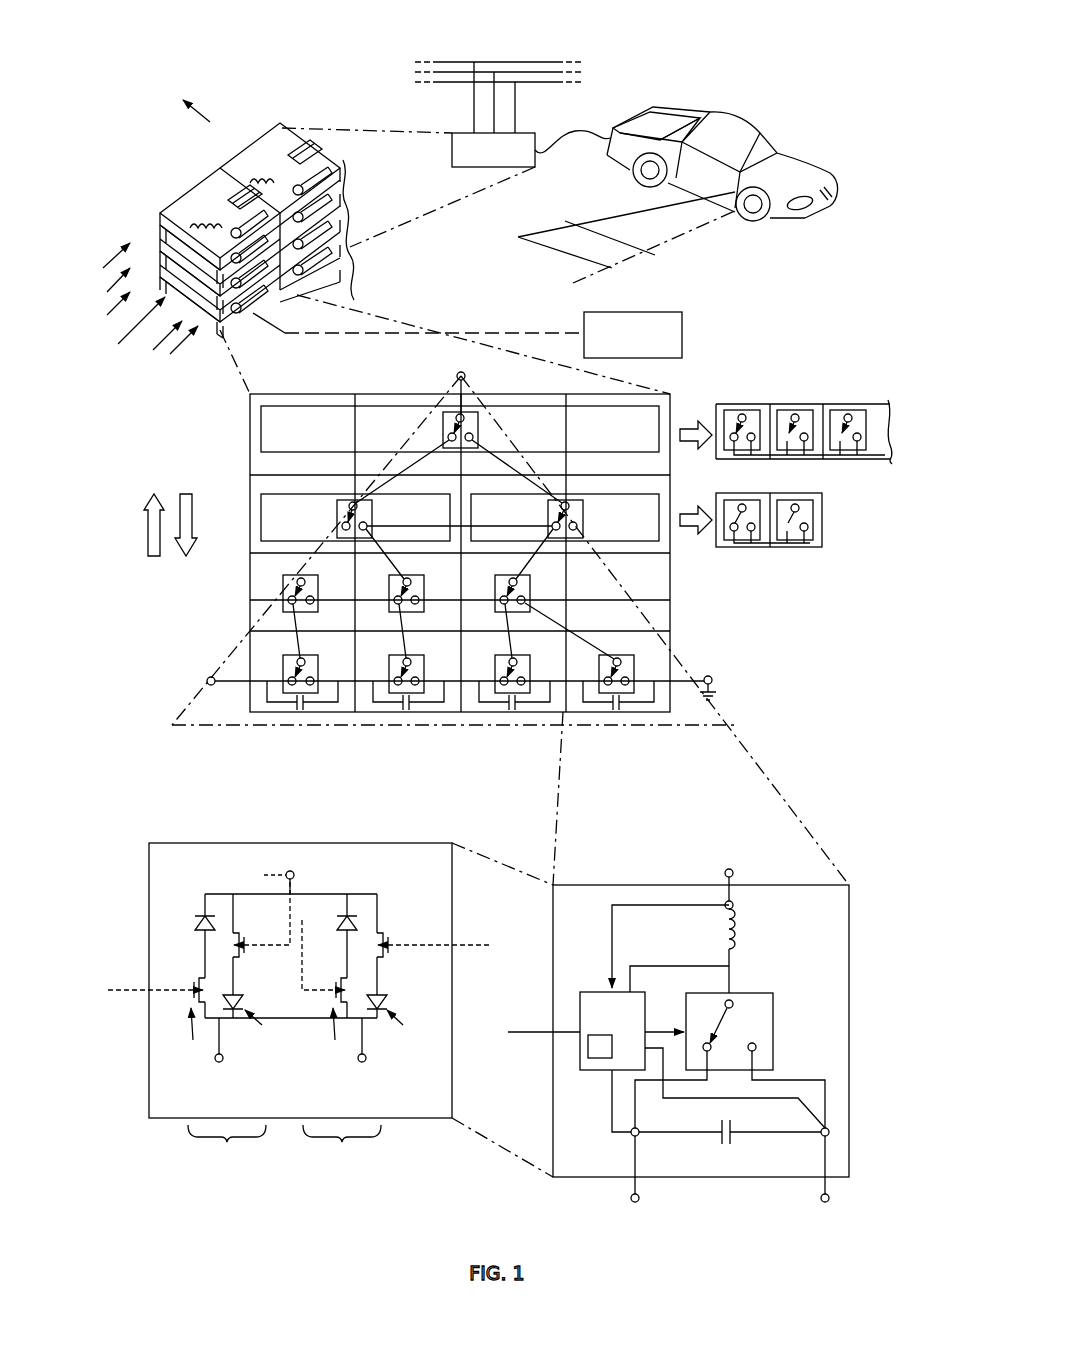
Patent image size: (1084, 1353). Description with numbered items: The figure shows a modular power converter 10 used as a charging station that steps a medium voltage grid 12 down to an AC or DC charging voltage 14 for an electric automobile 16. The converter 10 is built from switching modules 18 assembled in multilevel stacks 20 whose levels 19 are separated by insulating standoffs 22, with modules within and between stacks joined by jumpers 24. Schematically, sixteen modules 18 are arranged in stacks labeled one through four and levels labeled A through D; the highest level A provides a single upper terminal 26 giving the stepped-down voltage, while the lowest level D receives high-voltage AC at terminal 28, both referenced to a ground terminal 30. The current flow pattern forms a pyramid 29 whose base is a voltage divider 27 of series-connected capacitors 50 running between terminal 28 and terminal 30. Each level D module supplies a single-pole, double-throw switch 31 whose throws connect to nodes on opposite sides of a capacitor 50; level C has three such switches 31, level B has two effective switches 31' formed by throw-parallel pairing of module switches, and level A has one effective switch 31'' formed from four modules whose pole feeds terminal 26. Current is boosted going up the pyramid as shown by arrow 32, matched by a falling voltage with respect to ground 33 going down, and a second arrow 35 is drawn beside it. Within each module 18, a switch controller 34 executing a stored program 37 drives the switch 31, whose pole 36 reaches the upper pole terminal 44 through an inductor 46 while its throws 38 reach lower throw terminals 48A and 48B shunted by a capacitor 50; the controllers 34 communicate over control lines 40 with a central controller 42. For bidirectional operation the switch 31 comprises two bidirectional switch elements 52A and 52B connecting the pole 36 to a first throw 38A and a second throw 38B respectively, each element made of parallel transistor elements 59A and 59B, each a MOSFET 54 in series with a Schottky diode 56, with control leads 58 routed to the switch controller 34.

The modular power converter 10 is at (460, 155).
The medium voltage grid 12 is at (550, 62).
The charging voltage 14 is at (212, 120).
The electric automobile 16 is at (783, 157).
The switching module 18 is at (190, 190).
The level 19 is at (103, 285).
The multilevel stack 20 is at (182, 148).
The insulating standoff 22 is at (160, 220).
The jumper 24 is at (252, 183).
The upper terminal 26 is at (457, 373).
The voltage divider 27 is at (632, 728).
The terminal 28 is at (207, 681).
The pyramid 29 is at (405, 440).
The ground terminal 30 is at (713, 680).
The single-pole, double-throw switch 31 is at (458, 651).
The effective switch 31' is at (484, 489).
The effective switch 31'' is at (504, 430).
The arrow 32 is at (142, 530).
The ground 33 is at (703, 703).
The switch controller 34 is at (600, 990).
The voltage direction arrow 35 is at (203, 542).
The pole 36 is at (735, 1002).
The stored program 37 is at (600, 1062).
The throw 38 is at (712, 1044).
The first throw 38A is at (223, 1059).
The second throw 38B is at (366, 1059).
The control line 40 is at (335, 338).
The central controller 42 is at (683, 323).
The upper pole terminal 44 is at (745, 412).
The inductor 46 is at (723, 927).
The left throw terminal 48A is at (727, 456).
The right throw terminal 48B is at (870, 458).
The capacitor 50 is at (298, 712).
The bidirectional switch element 52A is at (351, 1010).
The bidirectional switch element 52B is at (342, 1032).
The MOSFET 54 is at (233, 905).
The Schottky diode 56 is at (200, 916).
The control lead 58 is at (112, 995).
The transistor element 59A is at (265, 1036).
The transistor element 59B is at (348, 1028).